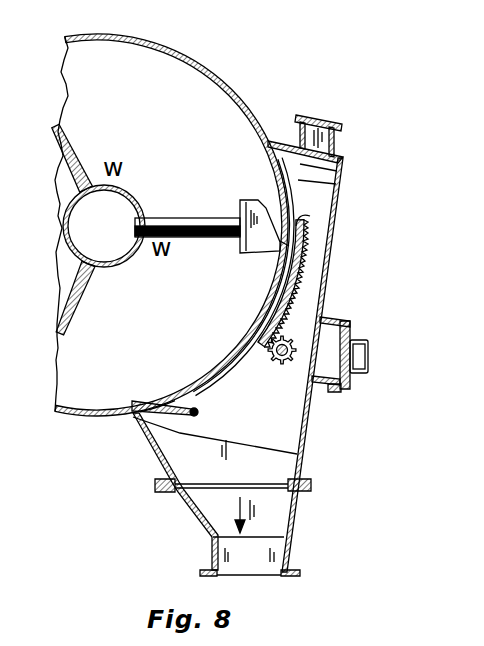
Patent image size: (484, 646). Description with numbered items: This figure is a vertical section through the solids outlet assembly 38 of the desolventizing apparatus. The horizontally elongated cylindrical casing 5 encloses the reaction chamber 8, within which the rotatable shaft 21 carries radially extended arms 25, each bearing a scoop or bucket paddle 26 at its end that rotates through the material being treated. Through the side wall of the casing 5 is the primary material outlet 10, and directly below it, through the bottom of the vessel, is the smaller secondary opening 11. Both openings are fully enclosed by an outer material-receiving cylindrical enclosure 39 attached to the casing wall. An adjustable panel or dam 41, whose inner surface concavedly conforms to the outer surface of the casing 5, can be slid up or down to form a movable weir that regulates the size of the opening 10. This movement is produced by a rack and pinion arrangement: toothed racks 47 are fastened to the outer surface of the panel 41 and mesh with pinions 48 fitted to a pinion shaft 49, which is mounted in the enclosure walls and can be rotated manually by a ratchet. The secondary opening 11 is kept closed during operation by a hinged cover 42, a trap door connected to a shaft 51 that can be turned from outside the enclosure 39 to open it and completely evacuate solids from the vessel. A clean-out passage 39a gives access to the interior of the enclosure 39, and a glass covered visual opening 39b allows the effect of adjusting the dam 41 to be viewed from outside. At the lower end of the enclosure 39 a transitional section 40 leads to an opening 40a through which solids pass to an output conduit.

The cylindrical casing 5 is at (204, 62).
The reaction chamber 8 is at (157, 161).
The primary material outlet 10 is at (277, 170).
The secondary opening 11 is at (158, 402).
The rotatable shaft 21 is at (126, 268).
The arms 25 is at (78, 158).
The paddle 26 is at (249, 247).
The solids outlet assembly 38 is at (386, 311).
The cylindrical enclosure 39 is at (342, 196).
The clean-out passage 39a is at (348, 390).
The visual opening 39b is at (336, 144).
The transitional section 40 is at (297, 511).
The opening 40a is at (278, 574).
The adjustable panel or dam 41 is at (310, 216).
The hinged cover 42 is at (150, 412).
The toothed racks 47 is at (303, 273).
The pinions 48 is at (266, 338).
The pinion shaft 49 is at (282, 357).
The shaft 51 is at (199, 413).